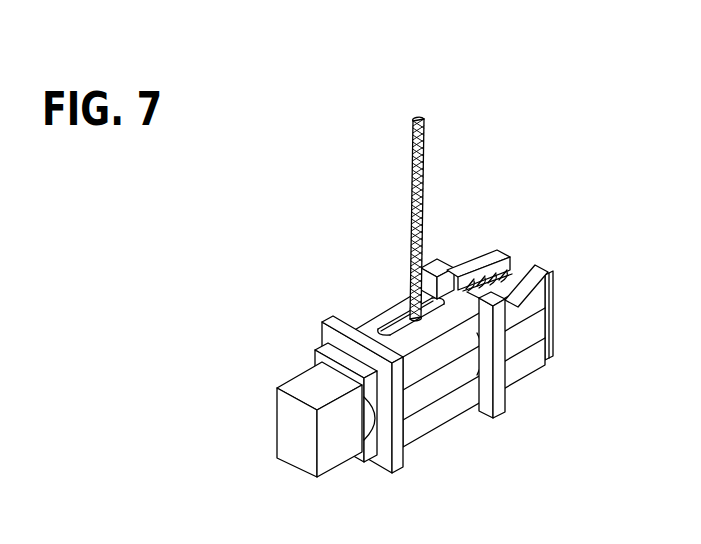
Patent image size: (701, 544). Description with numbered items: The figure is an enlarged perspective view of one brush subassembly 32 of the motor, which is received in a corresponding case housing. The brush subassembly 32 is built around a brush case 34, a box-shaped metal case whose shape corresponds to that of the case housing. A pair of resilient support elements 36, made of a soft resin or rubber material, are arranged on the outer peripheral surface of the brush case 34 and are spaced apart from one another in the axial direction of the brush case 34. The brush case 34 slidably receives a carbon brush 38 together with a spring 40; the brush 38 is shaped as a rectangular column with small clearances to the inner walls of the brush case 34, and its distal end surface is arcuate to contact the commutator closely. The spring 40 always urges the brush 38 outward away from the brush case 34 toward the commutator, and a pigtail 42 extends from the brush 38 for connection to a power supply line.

The brush subassembly 32 is at (338, 298).
The brush case 34 is at (443, 410).
The resilient support element 36 is at (500, 393).
The carbon brush 38 is at (302, 388).
The spring 40 is at (492, 270).
The pigtail 42 is at (424, 152).